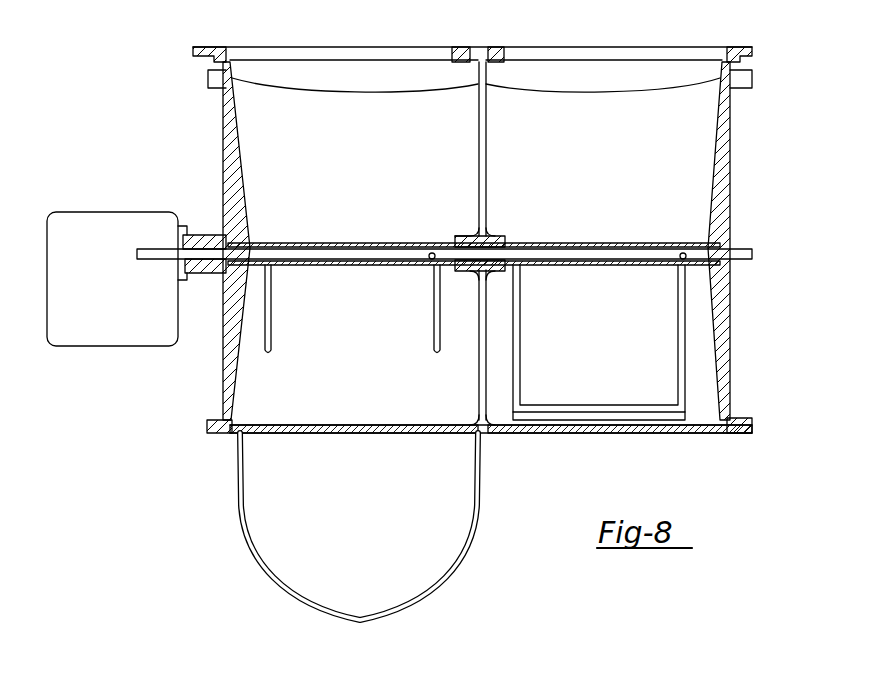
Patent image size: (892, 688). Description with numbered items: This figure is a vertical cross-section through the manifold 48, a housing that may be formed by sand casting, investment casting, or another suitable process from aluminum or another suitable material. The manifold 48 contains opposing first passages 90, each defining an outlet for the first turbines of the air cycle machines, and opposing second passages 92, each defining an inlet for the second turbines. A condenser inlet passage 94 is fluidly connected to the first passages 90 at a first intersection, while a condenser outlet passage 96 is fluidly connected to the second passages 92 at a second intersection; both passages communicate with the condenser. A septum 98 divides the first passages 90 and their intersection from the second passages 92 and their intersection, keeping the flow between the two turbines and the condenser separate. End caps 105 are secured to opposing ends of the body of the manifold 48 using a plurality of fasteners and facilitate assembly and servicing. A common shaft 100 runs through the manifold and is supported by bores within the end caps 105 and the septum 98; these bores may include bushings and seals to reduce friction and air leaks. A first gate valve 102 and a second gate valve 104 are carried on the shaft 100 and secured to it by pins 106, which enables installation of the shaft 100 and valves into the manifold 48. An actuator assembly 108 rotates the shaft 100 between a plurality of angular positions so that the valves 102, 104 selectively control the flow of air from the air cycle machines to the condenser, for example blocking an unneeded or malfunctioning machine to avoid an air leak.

The manifold 48 is at (772, 86).
The first passages 90 is at (498, 388).
The second passages 92 is at (362, 446).
The condenser inlet passage 94 is at (525, 97).
The condenser outlet passage 96 is at (297, 96).
The septum 98 is at (478, 130).
The shaft 100 is at (232, 244).
The first gate valve 102 is at (598, 412).
The second gate valve 104 is at (436, 264).
The end caps 105 is at (718, 176).
The pins 106 is at (430, 252).
The actuator assembly 108 is at (113, 202).